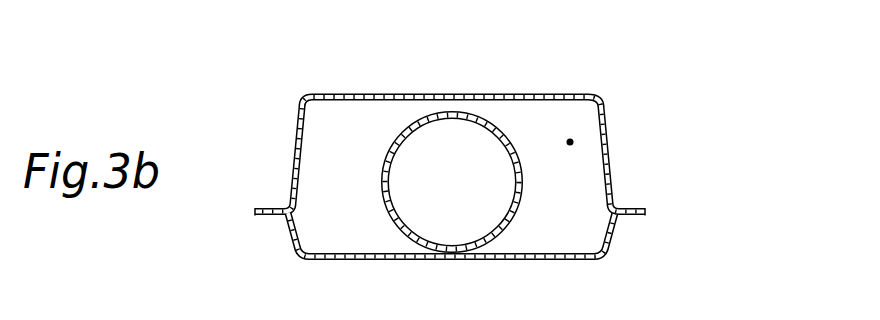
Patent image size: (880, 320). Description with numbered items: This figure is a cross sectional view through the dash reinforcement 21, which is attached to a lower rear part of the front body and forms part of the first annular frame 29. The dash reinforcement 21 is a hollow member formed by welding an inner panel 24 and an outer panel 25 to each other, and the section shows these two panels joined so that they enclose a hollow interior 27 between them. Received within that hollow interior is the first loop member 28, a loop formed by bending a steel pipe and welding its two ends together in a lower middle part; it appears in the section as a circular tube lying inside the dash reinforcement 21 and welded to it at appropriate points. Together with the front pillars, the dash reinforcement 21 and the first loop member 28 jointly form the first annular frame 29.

The dash reinforcement 21 is at (280, 238).
The inner panel 24 is at (602, 96).
The outer panel 25 is at (603, 254).
The hollow chamber 27 is at (573, 142).
The first loop member 28 is at (415, 119).
The first annular frame 29 is at (758, 104).